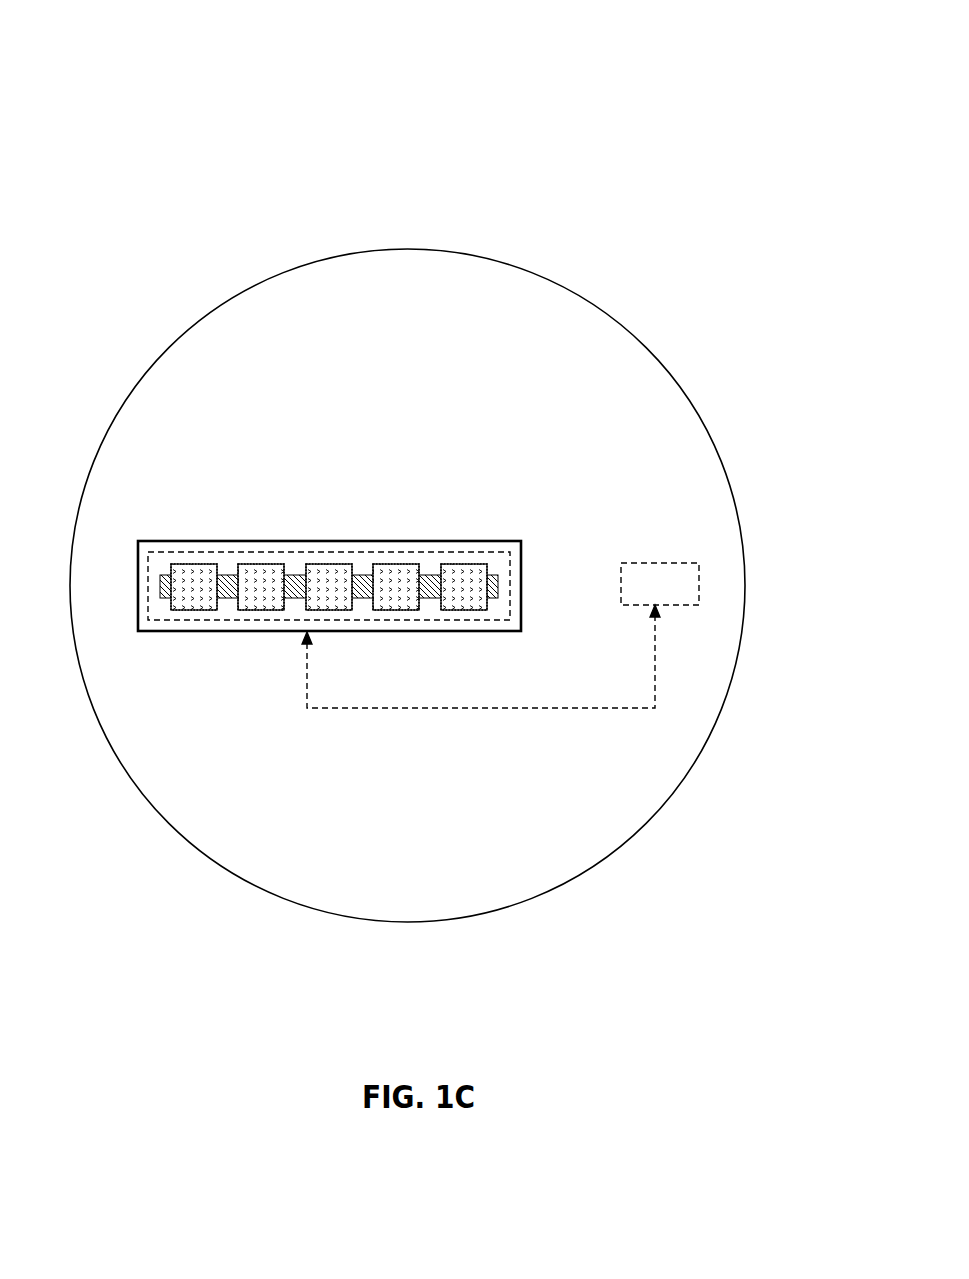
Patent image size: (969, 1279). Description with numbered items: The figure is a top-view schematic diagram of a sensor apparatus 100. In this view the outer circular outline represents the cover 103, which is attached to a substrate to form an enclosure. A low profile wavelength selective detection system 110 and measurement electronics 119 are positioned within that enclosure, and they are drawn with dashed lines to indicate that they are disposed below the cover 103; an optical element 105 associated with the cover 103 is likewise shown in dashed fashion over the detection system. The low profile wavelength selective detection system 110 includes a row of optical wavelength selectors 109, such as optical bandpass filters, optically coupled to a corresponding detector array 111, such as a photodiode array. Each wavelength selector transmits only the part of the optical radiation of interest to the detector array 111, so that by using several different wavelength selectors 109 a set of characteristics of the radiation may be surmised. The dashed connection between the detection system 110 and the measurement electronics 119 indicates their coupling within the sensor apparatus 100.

The sensor apparatus 100 is at (65, 45).
The cover 103 is at (412, 249).
The optical element 105 is at (331, 567).
The optical wavelength selectors 109 is at (193, 563).
The low profile wavelength selective detection system 110 is at (148, 564).
The detector array 111 is at (162, 597).
The measurement electronics 119 is at (656, 563).